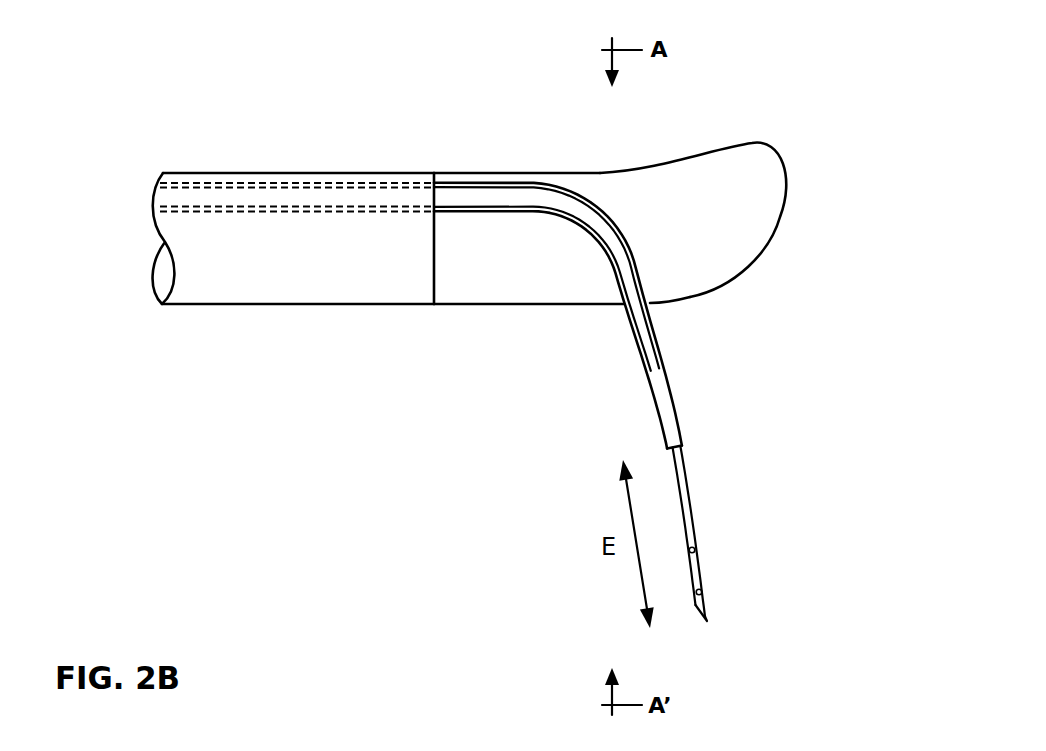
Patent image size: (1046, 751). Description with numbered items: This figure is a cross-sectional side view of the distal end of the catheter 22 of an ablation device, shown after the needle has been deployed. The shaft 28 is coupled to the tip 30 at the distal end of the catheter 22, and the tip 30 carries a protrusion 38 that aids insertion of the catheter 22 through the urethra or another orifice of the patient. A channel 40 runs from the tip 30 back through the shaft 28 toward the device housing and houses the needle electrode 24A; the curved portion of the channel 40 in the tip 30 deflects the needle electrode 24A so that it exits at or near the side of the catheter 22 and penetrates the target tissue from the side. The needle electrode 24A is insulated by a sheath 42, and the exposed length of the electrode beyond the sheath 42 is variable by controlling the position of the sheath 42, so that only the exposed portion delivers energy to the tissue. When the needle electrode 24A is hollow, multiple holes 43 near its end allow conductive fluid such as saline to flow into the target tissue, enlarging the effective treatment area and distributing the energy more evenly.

The catheter 22 is at (464, 128).
The shaft 28 is at (247, 303).
The tip 30 is at (472, 303).
The protrusion 38 is at (752, 145).
The channel 40 is at (650, 296).
The sheath 42 is at (668, 380).
The holes 43 is at (702, 592).
The needle electrode 24A is at (707, 613).